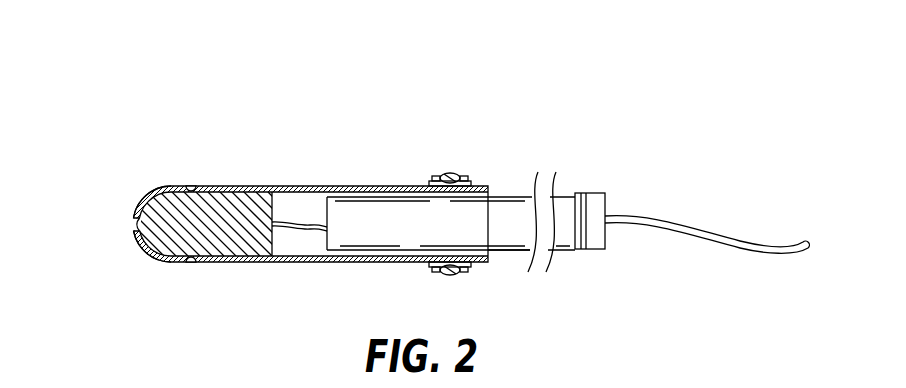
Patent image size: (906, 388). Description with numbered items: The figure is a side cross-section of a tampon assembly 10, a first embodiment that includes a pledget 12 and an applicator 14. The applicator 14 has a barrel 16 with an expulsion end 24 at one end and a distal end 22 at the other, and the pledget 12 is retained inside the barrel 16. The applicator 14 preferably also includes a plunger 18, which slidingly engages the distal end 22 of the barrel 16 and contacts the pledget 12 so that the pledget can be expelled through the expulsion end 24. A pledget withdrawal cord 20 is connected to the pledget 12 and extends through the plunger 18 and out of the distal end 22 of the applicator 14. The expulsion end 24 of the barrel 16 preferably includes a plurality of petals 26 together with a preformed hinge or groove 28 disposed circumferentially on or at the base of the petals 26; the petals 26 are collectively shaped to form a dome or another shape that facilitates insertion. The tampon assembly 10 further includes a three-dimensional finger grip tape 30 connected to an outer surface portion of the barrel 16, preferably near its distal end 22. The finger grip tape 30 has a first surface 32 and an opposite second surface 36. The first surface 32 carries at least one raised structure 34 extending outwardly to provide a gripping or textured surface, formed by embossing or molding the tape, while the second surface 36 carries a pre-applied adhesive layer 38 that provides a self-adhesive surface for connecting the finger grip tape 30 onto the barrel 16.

The tampon assembly 10 is at (277, 98).
The pledget 12 is at (218, 213).
The applicator 14 is at (496, 180).
The barrel 16 is at (292, 186).
The plunger 18 is at (592, 193).
The pledget withdrawal cord 20 is at (677, 221).
The distal end 22 is at (507, 266).
The expulsion end 24 is at (129, 180).
The petals 26 is at (145, 258).
The preformed hinge or groove 28 is at (192, 263).
The finger grip tape 30 is at (472, 279).
The first surface 32 is at (460, 176).
The raised structure 34 is at (450, 274).
The second surface 36 is at (430, 190).
The adhesive layer 38 is at (432, 262).